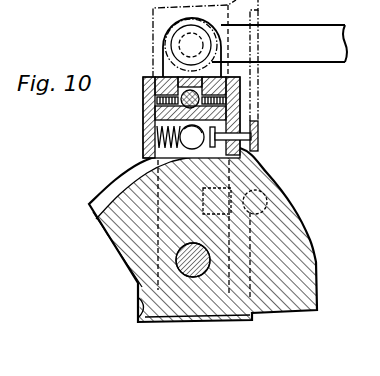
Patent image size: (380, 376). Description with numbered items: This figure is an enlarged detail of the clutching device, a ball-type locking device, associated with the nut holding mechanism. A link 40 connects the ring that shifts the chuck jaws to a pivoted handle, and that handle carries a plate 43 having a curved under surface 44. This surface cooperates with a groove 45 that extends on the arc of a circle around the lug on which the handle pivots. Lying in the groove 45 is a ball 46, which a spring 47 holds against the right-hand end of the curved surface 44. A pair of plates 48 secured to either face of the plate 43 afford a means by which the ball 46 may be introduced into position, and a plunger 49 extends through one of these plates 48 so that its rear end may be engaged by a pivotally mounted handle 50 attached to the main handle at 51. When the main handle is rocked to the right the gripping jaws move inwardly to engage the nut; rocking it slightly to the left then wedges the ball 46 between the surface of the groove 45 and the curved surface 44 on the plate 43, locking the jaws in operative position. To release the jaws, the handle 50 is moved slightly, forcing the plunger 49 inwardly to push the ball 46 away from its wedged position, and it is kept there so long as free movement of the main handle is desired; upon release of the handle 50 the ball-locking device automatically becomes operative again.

The link 40 is at (312, 25).
The plate 43 is at (163, 77).
The curved under surface 44 is at (183, 126).
The groove 45 is at (105, 182).
The ball 46 is at (133, 164).
The spring 47 is at (144, 142).
The plates 48 is at (143, 90).
The plunger 49 is at (241, 152).
The pivotally mounted handle 50 is at (258, 124).
The pivot attachment point 51 is at (267, 193).